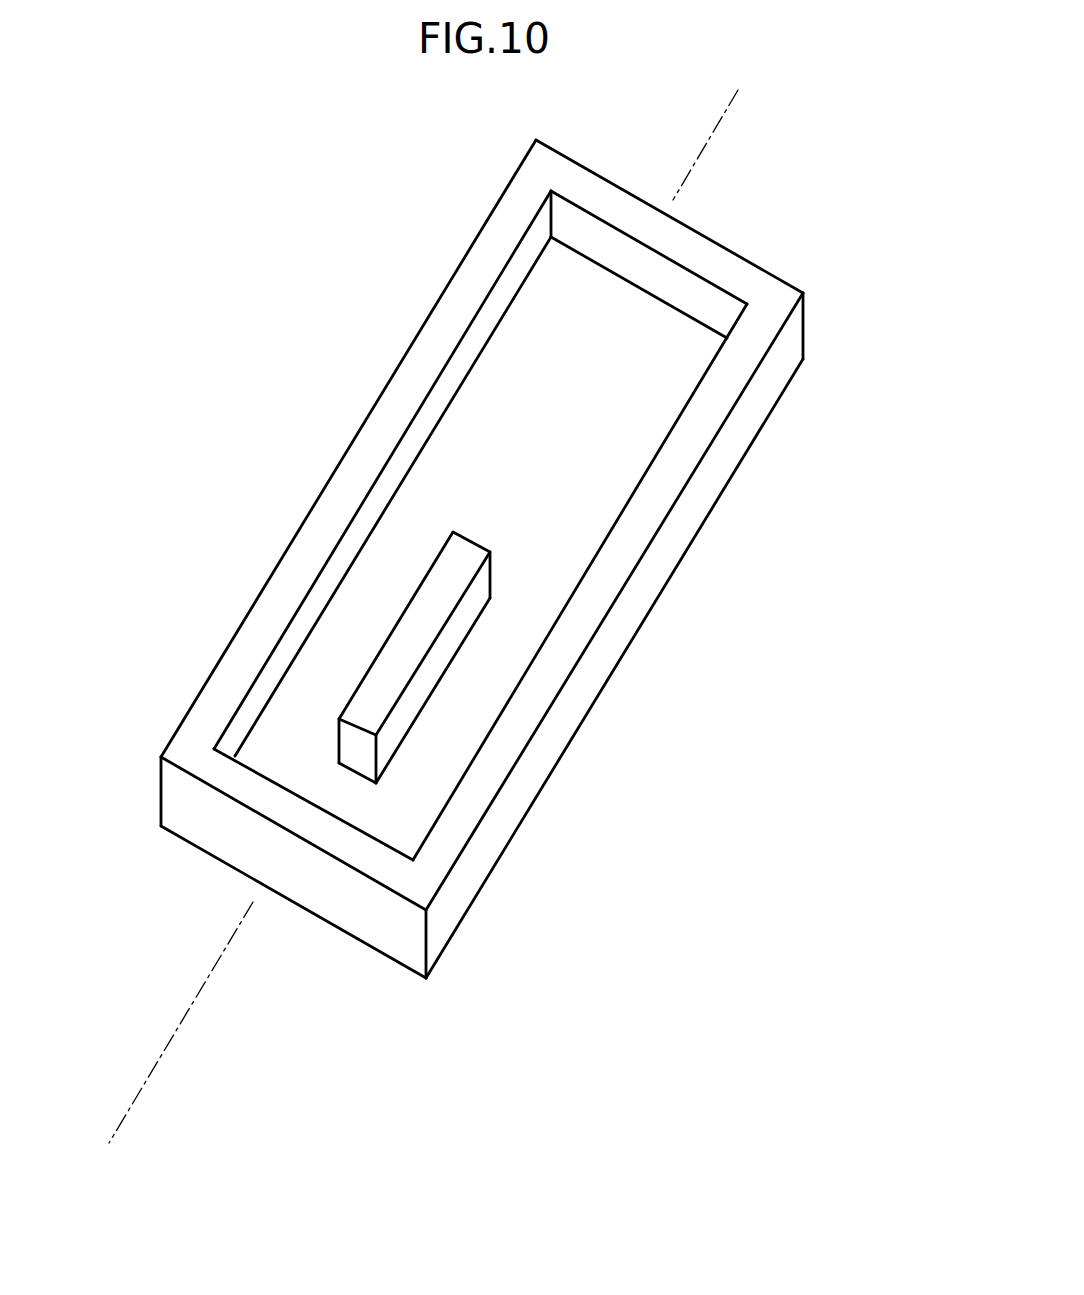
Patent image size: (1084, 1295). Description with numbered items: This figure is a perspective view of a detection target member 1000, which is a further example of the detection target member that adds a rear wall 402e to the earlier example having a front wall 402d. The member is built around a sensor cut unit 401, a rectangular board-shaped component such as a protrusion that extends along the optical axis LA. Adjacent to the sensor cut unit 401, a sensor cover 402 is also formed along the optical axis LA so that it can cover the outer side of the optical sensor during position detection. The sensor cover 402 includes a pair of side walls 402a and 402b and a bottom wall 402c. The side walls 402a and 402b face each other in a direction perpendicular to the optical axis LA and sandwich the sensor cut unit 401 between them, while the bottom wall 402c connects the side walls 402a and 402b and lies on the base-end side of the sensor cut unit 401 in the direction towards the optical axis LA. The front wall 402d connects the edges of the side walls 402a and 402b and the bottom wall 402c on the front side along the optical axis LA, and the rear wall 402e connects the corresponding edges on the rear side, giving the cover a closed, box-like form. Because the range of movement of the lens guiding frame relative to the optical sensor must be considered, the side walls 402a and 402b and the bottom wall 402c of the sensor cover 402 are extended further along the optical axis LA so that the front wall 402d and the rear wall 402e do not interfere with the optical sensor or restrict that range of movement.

The detection target member 1000 is at (402, 281).
The sensor cut unit 401 is at (460, 555).
The sensor cover 402 is at (161, 799).
The side wall 402a is at (218, 690).
The side wall 402b is at (498, 757).
The bottom wall 402c is at (417, 810).
The front wall 402d is at (363, 922).
The rear wall 402e is at (741, 275).
The optical axis LA is at (145, 1082).